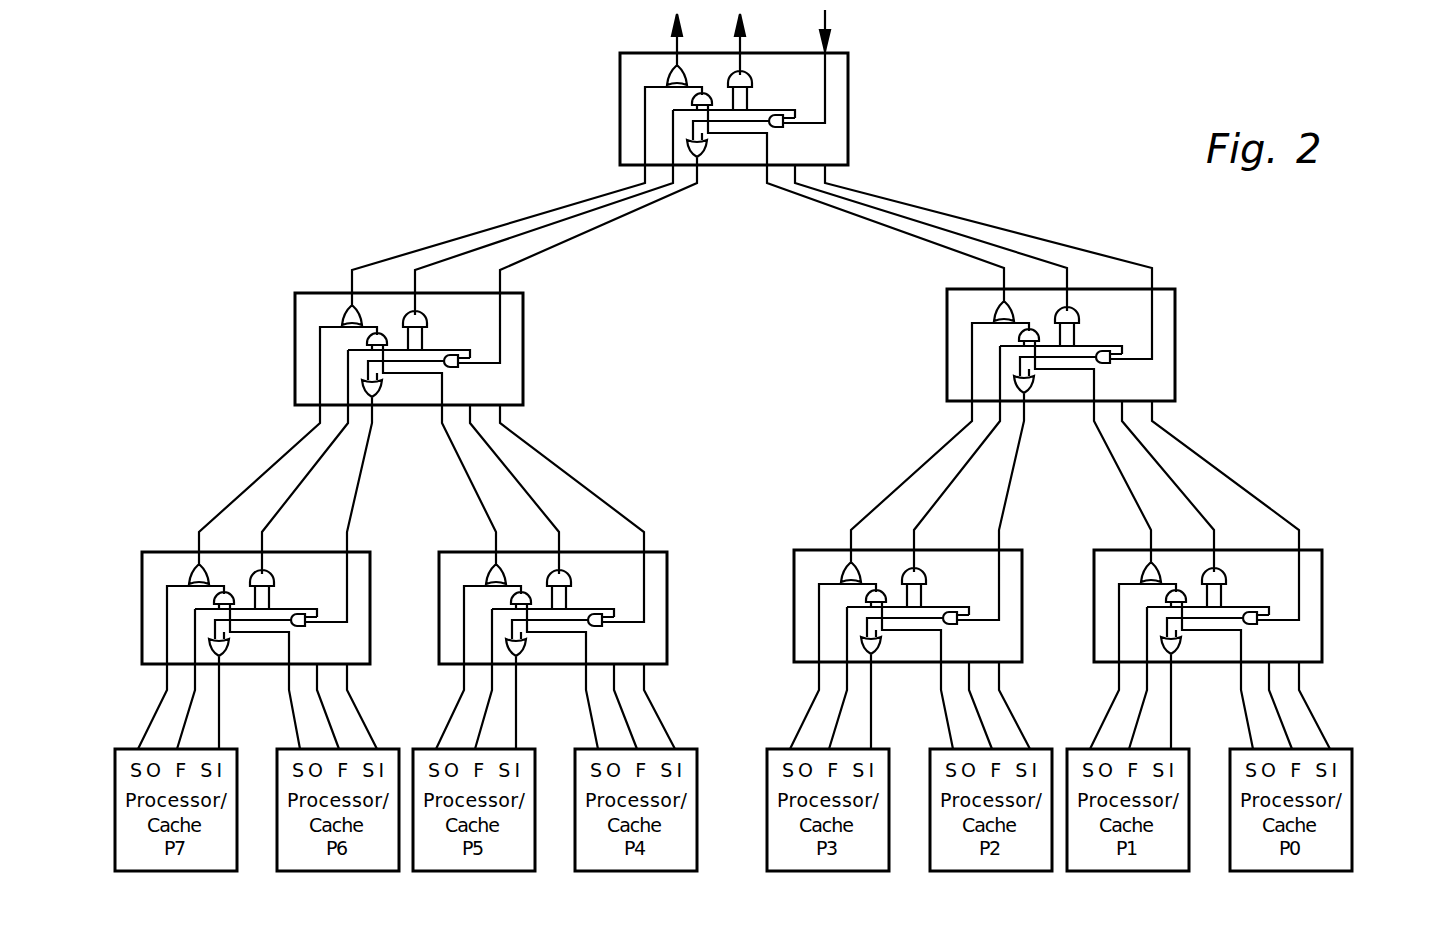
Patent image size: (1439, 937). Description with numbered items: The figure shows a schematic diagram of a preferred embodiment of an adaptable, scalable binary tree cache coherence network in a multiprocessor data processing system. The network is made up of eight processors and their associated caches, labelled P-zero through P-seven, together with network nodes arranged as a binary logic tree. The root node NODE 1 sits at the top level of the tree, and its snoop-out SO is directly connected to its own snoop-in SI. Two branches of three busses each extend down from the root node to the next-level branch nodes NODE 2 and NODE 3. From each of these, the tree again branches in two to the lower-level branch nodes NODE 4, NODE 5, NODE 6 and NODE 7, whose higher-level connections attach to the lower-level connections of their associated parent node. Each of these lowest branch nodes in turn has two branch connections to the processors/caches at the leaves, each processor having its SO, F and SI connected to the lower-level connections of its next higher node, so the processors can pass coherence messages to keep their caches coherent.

The root node 1 is at (850, 86).
The branch node 2 is at (1175, 322).
The branch node 3 is at (523, 325).
The branch node 4 is at (1322, 551).
The branch node 5 is at (1023, 551).
The branch node 6 is at (668, 553).
The branch node 7 is at (369, 553).